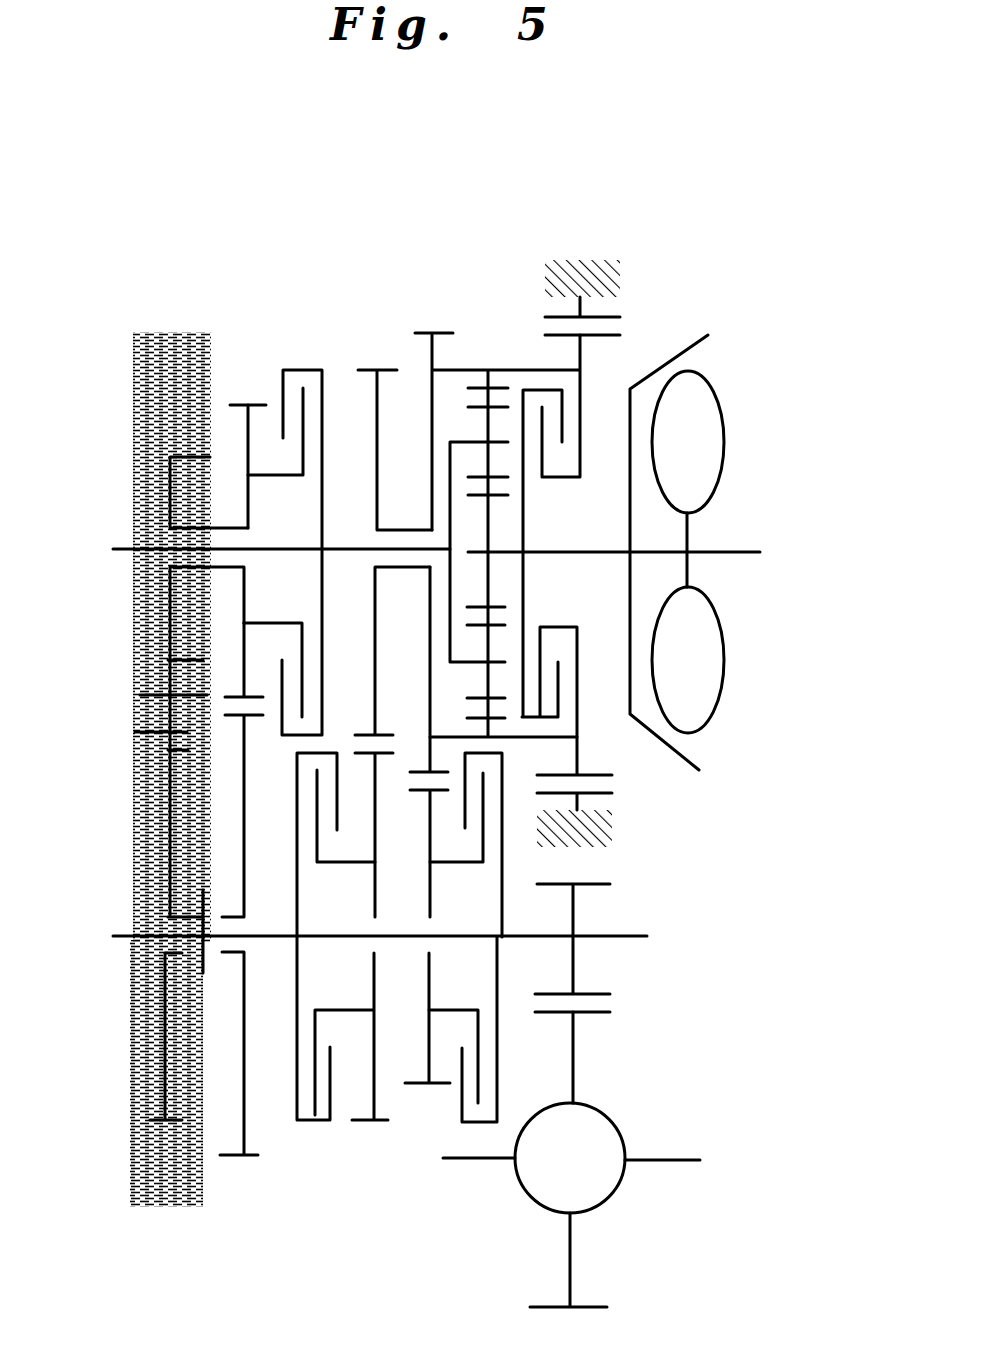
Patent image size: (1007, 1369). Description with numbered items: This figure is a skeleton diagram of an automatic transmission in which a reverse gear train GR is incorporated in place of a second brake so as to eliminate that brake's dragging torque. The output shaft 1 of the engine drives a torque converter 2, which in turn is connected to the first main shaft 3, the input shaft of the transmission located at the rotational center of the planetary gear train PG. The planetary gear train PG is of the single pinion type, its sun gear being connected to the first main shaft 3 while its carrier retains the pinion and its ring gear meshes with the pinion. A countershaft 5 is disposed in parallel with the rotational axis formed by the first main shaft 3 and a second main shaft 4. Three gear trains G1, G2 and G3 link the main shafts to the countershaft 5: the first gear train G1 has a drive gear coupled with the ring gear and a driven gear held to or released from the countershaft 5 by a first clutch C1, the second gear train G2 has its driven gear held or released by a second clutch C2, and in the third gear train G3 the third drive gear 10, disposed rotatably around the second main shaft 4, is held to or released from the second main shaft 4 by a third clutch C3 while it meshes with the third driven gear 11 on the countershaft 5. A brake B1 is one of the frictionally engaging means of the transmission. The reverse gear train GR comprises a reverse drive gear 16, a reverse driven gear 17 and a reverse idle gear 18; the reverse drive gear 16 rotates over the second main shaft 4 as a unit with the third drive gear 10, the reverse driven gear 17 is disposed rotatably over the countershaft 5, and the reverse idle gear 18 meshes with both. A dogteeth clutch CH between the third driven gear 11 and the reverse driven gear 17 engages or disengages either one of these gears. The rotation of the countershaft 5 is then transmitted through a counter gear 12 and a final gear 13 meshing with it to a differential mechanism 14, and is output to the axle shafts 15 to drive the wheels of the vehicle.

The output shaft 1 is at (749, 555).
The torque converter 2 is at (739, 392).
The first main shaft 3 is at (590, 550).
The second main shaft 4 is at (113, 549).
The countershaft 5 is at (113, 936).
The third drive gear 10 is at (248, 428).
The third driven gear 11 is at (244, 1152).
The counter gear 12 is at (600, 884).
The final gear 13 is at (590, 1310).
The differential mechanism 14 is at (634, 1105).
The axle shafts 15 is at (693, 1160).
The reverse drive gear 16 is at (170, 486).
The reverse driven gear 17 is at (165, 1087).
The reverse idle gear 18 is at (167, 718).
The reverse gear train GR is at (171, 372).
The first gear train G1 is at (435, 306).
The second gear train G2 is at (379, 330).
The third gear train G3 is at (246, 370).
The first clutch C1 is at (457, 1105).
The second clutch C2 is at (330, 1117).
The third clutch C3 is at (290, 400).
The first brake B1 is at (609, 318).
The planetary gear train PG is at (497, 332).
The dogteeth clutch CH is at (205, 893).